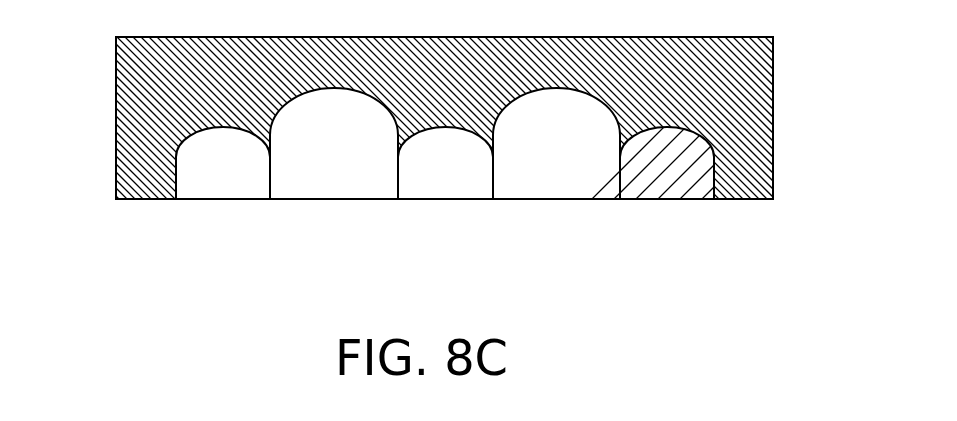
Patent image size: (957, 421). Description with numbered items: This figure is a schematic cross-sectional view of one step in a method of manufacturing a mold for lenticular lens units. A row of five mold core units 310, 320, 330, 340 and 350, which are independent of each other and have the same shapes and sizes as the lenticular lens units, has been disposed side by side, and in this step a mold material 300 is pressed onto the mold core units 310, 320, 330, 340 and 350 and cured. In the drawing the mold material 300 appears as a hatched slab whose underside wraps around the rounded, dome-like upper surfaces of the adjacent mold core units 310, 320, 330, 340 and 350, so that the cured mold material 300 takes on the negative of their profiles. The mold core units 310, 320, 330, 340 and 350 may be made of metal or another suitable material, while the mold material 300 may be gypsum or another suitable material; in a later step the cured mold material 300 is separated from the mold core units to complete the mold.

The mold material 300 is at (760, 108).
The mold core unit 310 is at (218, 181).
The mold core unit 320 is at (331, 181).
The mold core unit 330 is at (449, 181).
The mold core unit 340 is at (559, 181).
The mold core unit 350 is at (678, 181).